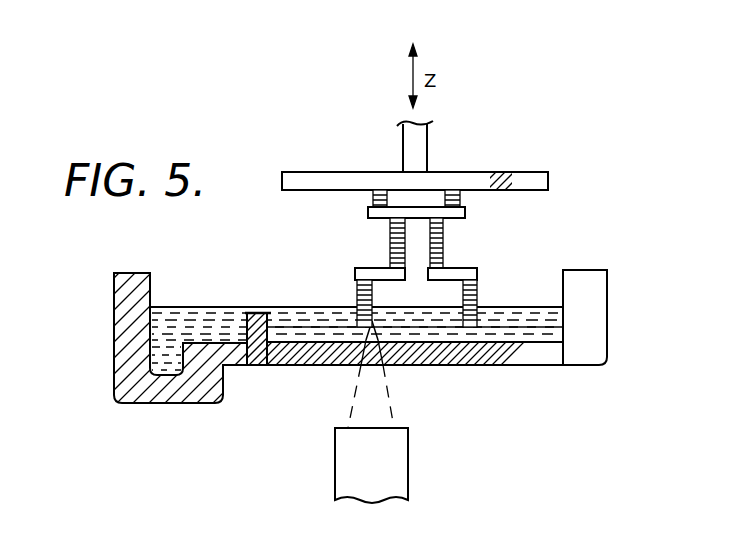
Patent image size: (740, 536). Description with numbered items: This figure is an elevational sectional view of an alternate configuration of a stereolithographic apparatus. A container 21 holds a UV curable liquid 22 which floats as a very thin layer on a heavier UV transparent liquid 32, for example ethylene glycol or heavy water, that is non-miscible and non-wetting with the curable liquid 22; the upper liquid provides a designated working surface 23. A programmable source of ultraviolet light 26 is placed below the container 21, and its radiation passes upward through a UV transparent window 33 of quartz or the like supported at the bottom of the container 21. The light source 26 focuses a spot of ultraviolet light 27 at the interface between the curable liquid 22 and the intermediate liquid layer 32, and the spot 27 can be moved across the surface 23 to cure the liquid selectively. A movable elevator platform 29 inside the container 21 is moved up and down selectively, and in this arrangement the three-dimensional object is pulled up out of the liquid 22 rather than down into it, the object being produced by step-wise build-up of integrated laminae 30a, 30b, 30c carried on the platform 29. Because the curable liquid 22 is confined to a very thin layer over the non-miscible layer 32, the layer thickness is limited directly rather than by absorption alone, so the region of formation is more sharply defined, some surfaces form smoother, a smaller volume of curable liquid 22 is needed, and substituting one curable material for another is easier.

The container 21 is at (113, 341).
The UV curable liquid 22 is at (307, 305).
The working surface 23 is at (303, 347).
The source of ultraviolet light 26 is at (409, 455).
The spot of ultraviolet light 27 is at (380, 365).
The elevator platform 29 is at (500, 185).
The lamina 30a is at (478, 292).
The lamina 30b is at (480, 273).
The lamina 30c is at (460, 268).
The UV transparent liquid 32 is at (530, 330).
The UV transparent window 33 is at (487, 366).